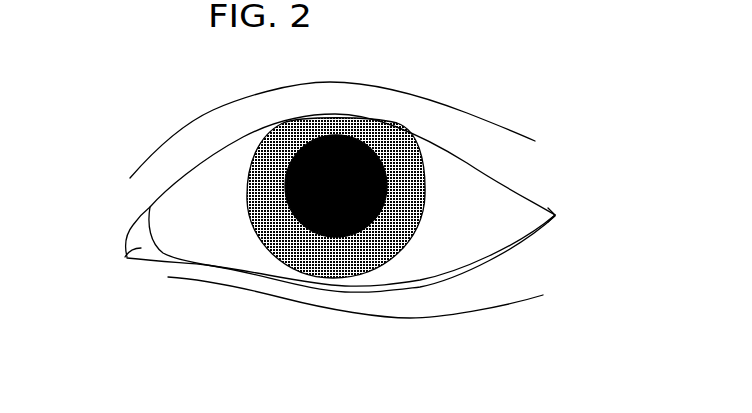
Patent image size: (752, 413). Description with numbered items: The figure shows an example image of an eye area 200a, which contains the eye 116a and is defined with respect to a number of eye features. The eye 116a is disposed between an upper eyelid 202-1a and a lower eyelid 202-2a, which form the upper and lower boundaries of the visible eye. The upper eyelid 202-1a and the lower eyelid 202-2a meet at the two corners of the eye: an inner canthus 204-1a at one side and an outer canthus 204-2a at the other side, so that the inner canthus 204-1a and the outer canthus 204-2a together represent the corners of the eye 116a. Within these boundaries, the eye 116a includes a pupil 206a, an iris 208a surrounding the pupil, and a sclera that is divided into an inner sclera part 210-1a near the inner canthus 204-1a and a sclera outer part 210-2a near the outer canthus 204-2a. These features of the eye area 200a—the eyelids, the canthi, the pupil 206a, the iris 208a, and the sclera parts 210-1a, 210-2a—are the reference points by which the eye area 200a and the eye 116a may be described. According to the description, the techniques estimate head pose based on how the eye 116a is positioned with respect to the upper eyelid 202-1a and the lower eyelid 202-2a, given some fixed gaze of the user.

The eye area 200a is at (532, 80).
The upper eyelid 202-1a is at (338, 100).
The lower eyelid 202-2a is at (335, 303).
The inner canthus 204-1a is at (133, 252).
The outer canthus 204-2a is at (556, 215).
The pupil 206a is at (314, 150).
The iris 208a is at (373, 137).
The inner sclera part 210-1a is at (200, 230).
The sclera outer part 210-2a is at (483, 178).
The eye 116a is at (510, 233).